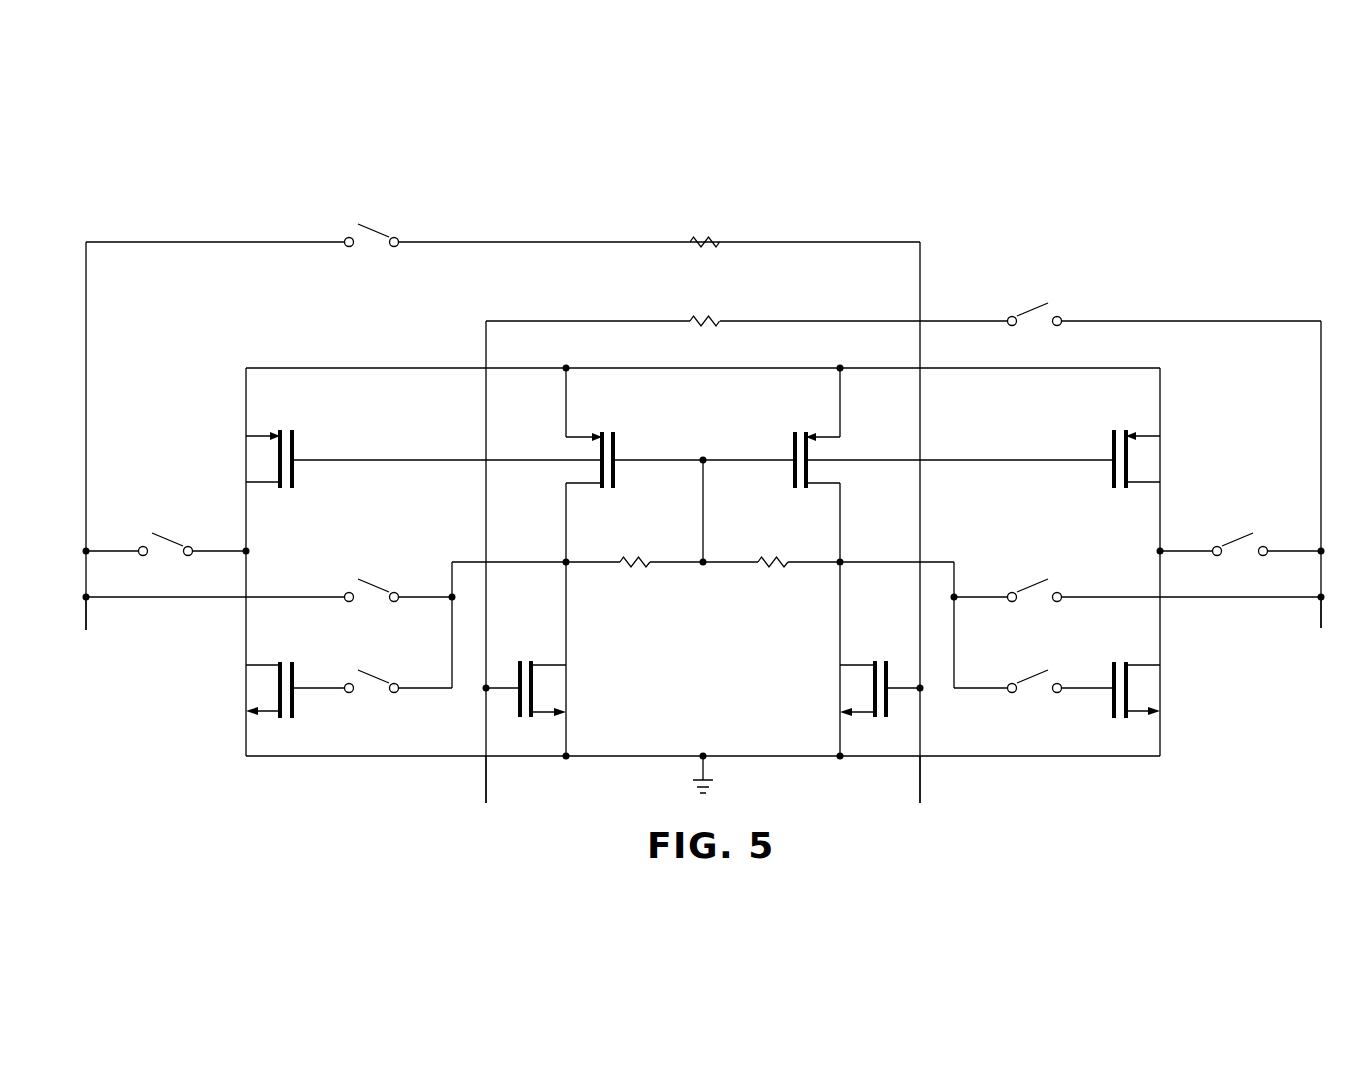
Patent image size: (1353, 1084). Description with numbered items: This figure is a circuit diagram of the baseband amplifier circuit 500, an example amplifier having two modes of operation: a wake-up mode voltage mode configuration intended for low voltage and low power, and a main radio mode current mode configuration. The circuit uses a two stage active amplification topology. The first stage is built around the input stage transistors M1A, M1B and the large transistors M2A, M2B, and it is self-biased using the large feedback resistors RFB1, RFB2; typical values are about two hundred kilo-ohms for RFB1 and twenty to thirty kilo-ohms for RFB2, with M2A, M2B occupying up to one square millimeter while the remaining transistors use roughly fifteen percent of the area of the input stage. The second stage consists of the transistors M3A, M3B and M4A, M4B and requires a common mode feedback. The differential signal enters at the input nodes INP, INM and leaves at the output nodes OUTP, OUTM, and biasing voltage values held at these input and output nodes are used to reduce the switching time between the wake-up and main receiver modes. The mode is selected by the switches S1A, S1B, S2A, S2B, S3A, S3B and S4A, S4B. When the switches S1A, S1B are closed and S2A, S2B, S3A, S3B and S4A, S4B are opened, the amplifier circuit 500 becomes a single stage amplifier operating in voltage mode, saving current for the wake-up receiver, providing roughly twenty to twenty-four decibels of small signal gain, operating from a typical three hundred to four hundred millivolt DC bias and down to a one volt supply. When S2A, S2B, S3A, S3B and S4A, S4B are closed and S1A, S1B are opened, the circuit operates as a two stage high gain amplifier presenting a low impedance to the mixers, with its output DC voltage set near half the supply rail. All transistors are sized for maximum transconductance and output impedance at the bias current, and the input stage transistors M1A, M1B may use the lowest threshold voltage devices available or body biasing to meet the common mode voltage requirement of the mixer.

The baseband amplifier circuit 500 is at (1007, 162).
The input stage transistor M1A is at (546, 689).
The input stage transistor M1B is at (859, 689).
The first stage transistor M2A is at (597, 441).
The first stage transistor M2B is at (810, 441).
The second stage transistor M3A is at (1158, 459).
The second stage transistor M3B is at (246, 459).
The second stage transistor M4A is at (1158, 690).
The second stage transistor M4B is at (246, 690).
The switch S1A is at (1035, 573).
The switch S1B is at (372, 573).
The switch S2A is at (1035, 665).
The switch S2B is at (372, 665).
The switch S3A is at (1240, 526).
The switch S3B is at (166, 527).
The switch S4A is at (1035, 298).
The switch S4B is at (372, 219).
The feedback resistor RFB1 is at (702, 543).
The feedback resistor RFB2 is at (702, 262).
The positive input terminal INP is at (488, 798).
The negative input terminal INM is at (918, 798).
The positive output terminal OUTP is at (86, 632).
The negative output terminal OUTM is at (1322, 632).